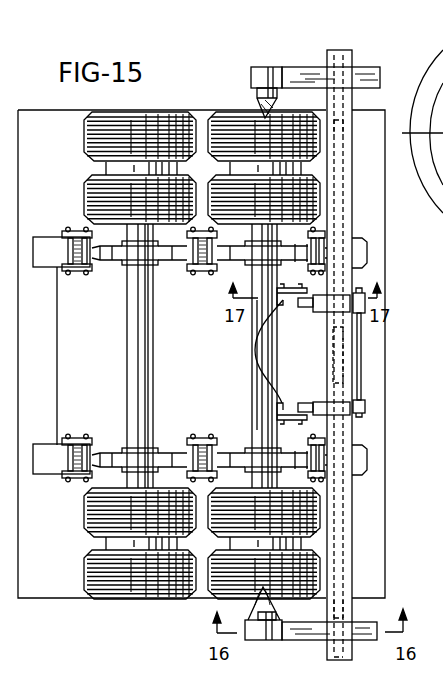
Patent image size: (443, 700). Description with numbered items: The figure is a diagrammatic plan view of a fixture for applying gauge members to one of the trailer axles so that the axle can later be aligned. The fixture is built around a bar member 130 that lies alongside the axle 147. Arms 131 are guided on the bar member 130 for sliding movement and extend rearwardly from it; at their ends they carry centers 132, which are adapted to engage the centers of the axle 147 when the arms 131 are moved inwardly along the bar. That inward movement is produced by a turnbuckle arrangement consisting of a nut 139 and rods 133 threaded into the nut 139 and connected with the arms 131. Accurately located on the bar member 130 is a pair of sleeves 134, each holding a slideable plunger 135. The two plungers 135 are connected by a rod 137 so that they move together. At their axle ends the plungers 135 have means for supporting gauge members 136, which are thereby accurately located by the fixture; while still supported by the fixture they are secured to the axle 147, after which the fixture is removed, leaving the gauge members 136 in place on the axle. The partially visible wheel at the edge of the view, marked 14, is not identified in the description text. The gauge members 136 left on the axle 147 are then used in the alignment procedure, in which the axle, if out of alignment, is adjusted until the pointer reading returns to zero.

The bar member 130 is at (347, 228).
The arms 131 is at (310, 70).
The centers 132 is at (257, 96).
The rods 133 is at (345, 182).
The sleeves 134 is at (350, 296).
The plungers 135 is at (298, 337).
The gauge members 136 is at (277, 297).
The rod 137 is at (359, 350).
The nut 139 is at (345, 370).
The axle 147 is at (258, 422).
The wheel (partial) 14 is at (422, 131).